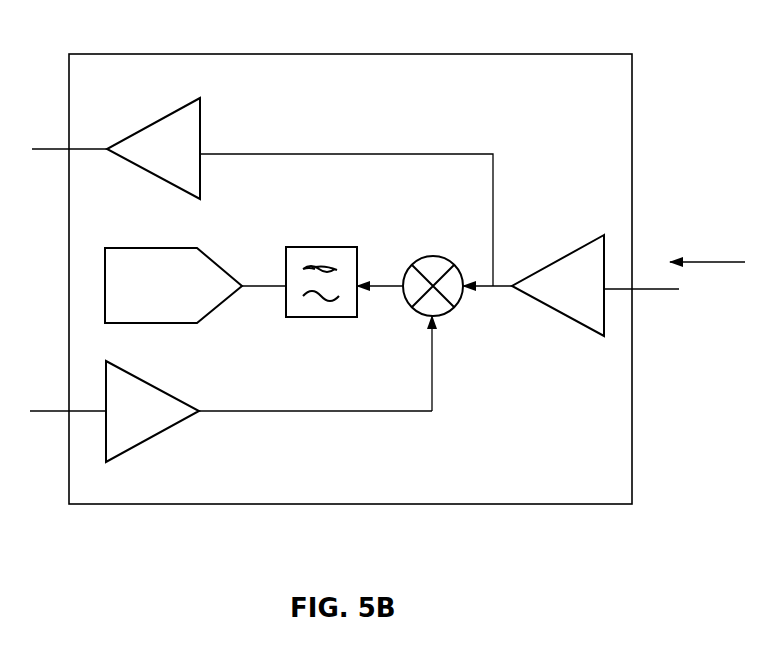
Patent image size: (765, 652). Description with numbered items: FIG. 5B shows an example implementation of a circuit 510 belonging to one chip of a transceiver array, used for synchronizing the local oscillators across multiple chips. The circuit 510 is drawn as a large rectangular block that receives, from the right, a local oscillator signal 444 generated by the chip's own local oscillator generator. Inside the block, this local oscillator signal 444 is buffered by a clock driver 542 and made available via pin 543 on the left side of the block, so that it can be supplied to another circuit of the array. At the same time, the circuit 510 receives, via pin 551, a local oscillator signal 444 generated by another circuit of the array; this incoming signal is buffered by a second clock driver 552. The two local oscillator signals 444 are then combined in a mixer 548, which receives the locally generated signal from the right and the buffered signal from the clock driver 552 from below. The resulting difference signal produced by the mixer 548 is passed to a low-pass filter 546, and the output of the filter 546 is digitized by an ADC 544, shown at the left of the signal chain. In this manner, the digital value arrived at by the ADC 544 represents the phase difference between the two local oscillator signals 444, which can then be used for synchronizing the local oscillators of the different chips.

The circuit 510 is at (162, 54).
The clock driver 542 is at (163, 116).
The pin 543 is at (58, 147).
The ADC 544 is at (147, 248).
The low-pass filter 546 is at (315, 247).
The mixer 548 is at (428, 255).
The pin 551 is at (50, 411).
The clock driver 552 is at (135, 372).
The local oscillator signal 444 is at (709, 261).